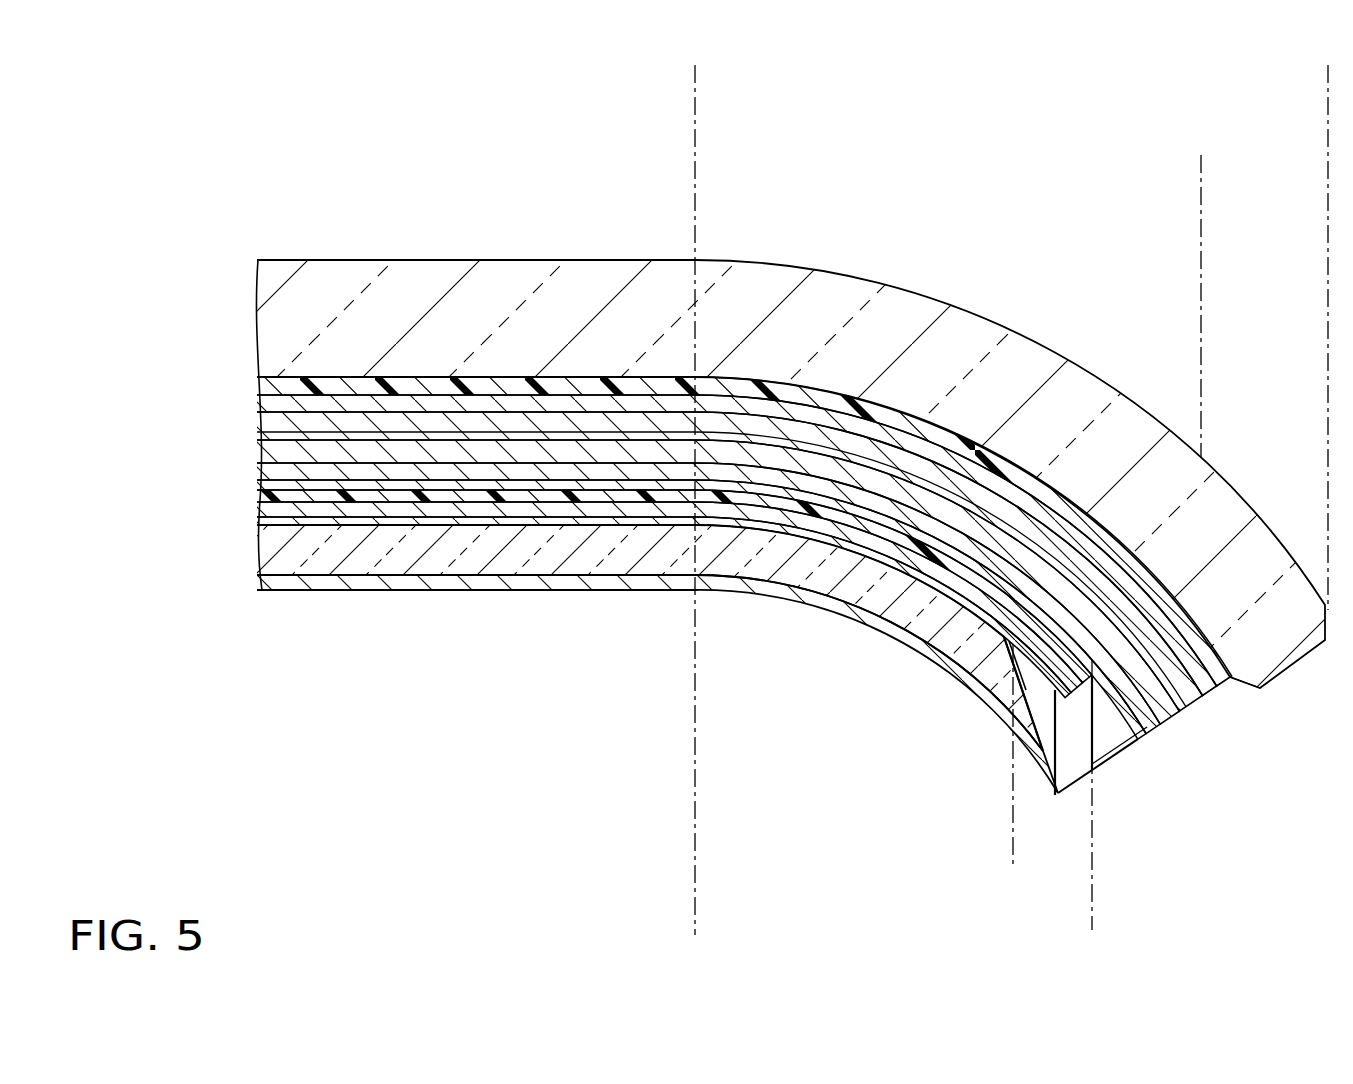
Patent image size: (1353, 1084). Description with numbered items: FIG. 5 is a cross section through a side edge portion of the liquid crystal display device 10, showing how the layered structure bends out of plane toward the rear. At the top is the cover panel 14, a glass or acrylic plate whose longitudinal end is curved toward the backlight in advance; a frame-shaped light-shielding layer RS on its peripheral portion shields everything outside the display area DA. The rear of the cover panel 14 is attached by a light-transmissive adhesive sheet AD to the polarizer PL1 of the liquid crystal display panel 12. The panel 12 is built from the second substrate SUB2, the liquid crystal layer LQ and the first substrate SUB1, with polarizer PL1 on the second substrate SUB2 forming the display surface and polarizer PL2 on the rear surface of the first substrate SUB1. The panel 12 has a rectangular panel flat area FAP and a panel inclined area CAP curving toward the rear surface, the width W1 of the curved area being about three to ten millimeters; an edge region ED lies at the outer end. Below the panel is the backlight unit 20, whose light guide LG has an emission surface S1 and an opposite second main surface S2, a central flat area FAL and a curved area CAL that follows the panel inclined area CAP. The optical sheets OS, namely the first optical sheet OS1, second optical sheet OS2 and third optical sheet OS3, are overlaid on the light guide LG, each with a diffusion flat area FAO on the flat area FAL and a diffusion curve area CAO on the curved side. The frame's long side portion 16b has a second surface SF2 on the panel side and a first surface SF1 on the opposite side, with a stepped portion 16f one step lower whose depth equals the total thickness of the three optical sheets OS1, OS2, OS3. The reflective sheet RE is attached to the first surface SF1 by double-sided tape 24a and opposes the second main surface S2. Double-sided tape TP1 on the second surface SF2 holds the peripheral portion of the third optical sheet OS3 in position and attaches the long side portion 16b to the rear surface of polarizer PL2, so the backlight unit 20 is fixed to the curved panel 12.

The liquid crystal display device 10 is at (325, 242).
The liquid crystal display panel 12 is at (165, 405).
The cover panel 14 is at (425, 280).
The stepped portion 16f is at (1005, 690).
The long side portion 16b is at (1107, 747).
The backlight unit 20 is at (657, 656).
The double-sided tape 24a is at (1073, 695).
The adhesive sheet AD is at (605, 378).
The polarizer PL1 is at (277, 403).
The polarizer PL2 is at (253, 477).
The first substrate SUB1 is at (258, 460).
The second substrate SUB2 is at (273, 423).
The liquid crystal layer LQ is at (267, 442).
The optical sheets OS is at (415, 660).
The first optical sheet OS1 is at (283, 527).
The second optical sheet OS2 is at (338, 510).
The third optical sheet OS3 is at (392, 497).
The light guide LG is at (433, 567).
The reflective sheet RE is at (473, 580).
The first main surface S1 is at (598, 520).
The second main surface S2 is at (552, 577).
The first surface SF1 is at (1030, 735).
The second surface SF2 is at (1160, 712).
The double-sided tape TP1 is at (1125, 740).
The light-shielding layer RS is at (1232, 664).
The width W1 is at (1328, 80).
The panel flat area FAP is at (695, 126).
The panel inclined area CAP is at (1328, 126).
The display area DA is at (1201, 176).
The edge area ED is at (1328, 176).
The flat area FAL is at (695, 849).
The curved area CAL is at (1013, 849).
The diffusion flat area FAO is at (695, 916).
The diffusion curve area CAO is at (1092, 916).